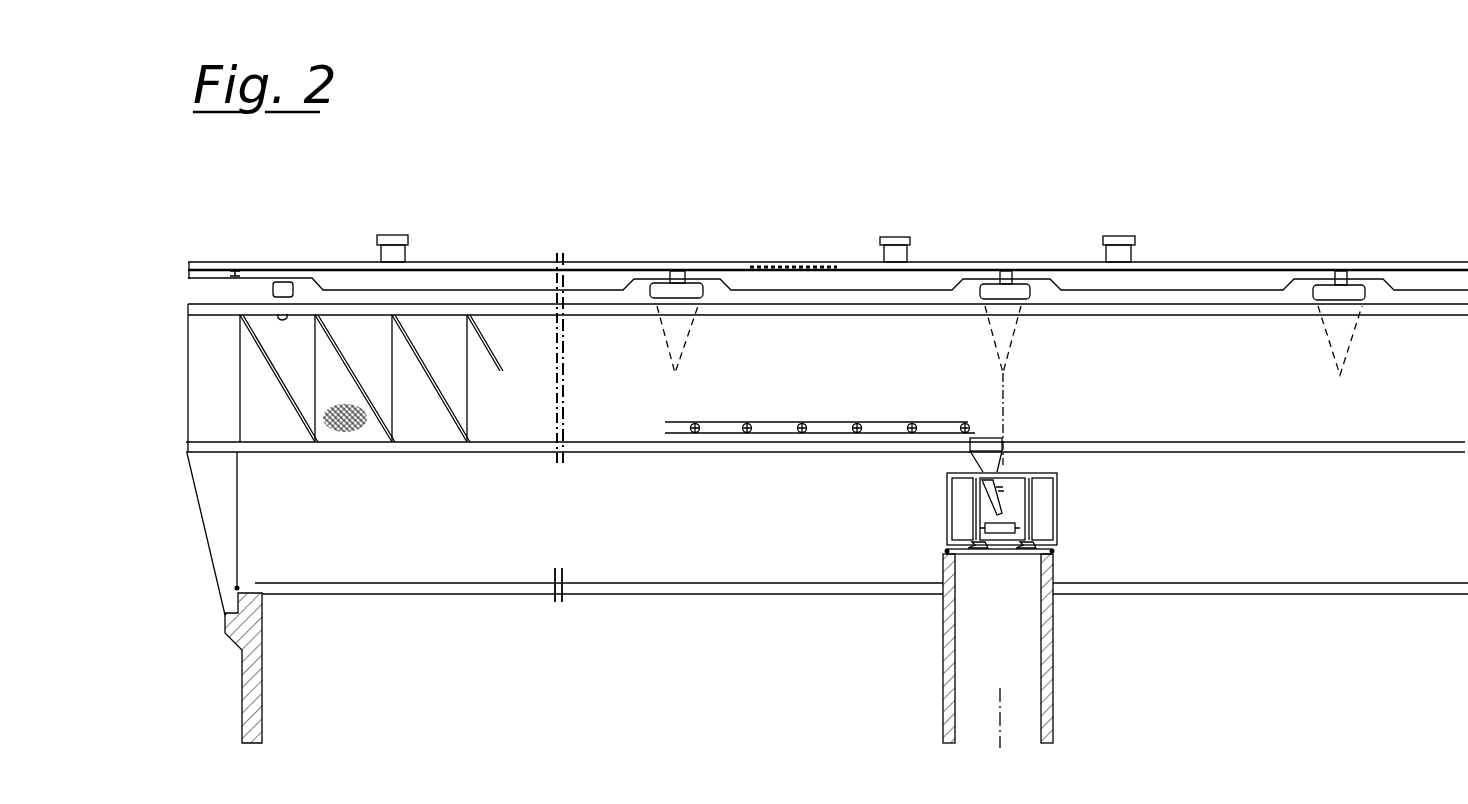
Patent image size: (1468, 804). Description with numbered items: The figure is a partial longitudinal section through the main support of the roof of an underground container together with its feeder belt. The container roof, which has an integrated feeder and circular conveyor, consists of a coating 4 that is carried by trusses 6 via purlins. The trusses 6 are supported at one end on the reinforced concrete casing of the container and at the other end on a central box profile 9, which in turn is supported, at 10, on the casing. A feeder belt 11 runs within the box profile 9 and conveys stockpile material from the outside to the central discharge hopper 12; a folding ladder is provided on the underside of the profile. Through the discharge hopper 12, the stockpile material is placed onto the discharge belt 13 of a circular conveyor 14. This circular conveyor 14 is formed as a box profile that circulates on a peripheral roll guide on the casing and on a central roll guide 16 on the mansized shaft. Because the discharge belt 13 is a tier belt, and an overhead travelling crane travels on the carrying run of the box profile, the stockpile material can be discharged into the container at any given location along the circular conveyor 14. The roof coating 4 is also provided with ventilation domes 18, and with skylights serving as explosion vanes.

The coating 4 is at (1424, 265).
The trusses 6 is at (665, 288).
The ventilation domes 18 is at (895, 238).
The central box profile 9 is at (1295, 450).
The support of the box profile on the casing 10 is at (225, 617).
The feeder belt 11 is at (840, 425).
The discharge hopper 12 is at (1000, 437).
The discharge belt 13 is at (1002, 534).
The circular conveyor 14 is at (1056, 520).
The central roll guide 16 is at (950, 546).